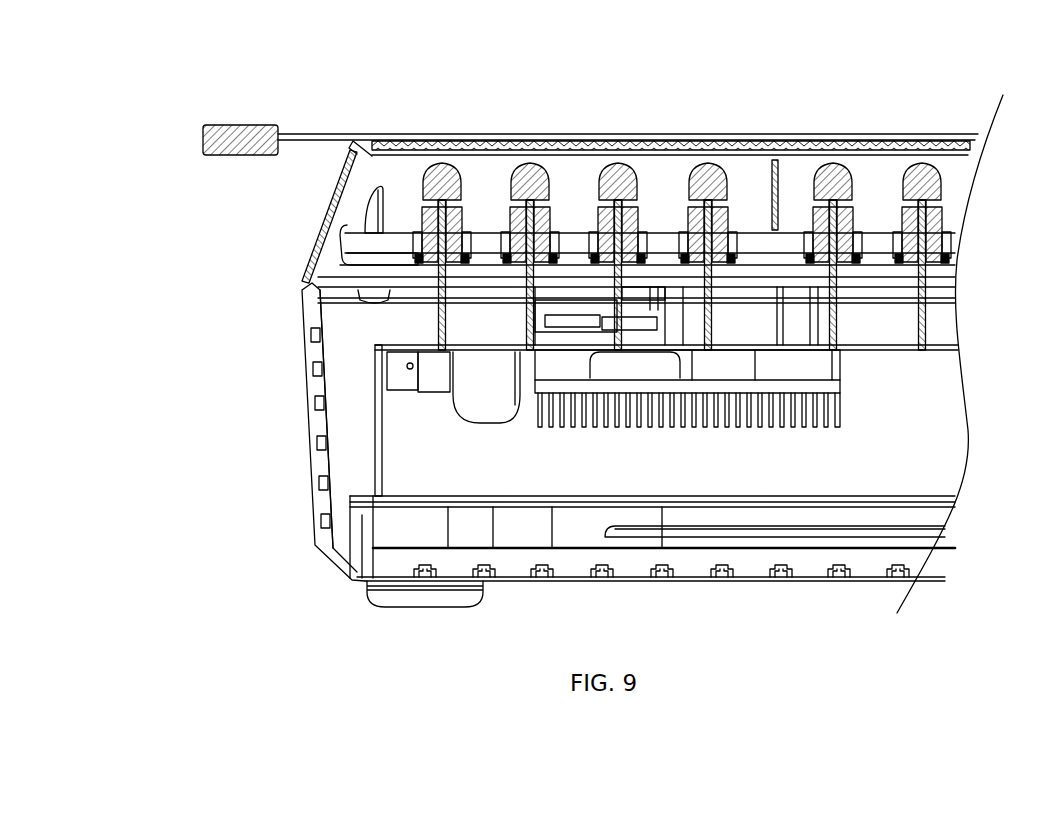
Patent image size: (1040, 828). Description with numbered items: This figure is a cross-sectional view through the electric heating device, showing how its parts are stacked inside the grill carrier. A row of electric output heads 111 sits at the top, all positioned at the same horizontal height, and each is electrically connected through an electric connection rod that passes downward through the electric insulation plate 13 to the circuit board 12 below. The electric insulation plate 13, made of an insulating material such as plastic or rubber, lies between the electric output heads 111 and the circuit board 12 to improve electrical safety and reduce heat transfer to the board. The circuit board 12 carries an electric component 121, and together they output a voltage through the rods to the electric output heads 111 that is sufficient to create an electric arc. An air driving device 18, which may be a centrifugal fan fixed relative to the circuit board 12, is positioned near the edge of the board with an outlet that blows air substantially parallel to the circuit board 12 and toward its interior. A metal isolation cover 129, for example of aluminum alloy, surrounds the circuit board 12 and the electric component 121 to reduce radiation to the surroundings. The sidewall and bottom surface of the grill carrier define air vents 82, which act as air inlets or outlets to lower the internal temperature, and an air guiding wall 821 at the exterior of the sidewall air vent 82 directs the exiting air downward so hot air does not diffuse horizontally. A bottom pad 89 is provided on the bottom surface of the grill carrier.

The circuit board 12 is at (414, 344).
The electric insulation plate 13 is at (341, 272).
The air driving device 18 is at (571, 308).
The air vent 82 is at (540, 469).
The bottom pad 89 is at (433, 597).
The electric output head 111 is at (702, 235).
The electric component 121 is at (483, 388).
The metal isolation cover 129 is at (381, 447).
The air guiding wall 821 is at (313, 396).